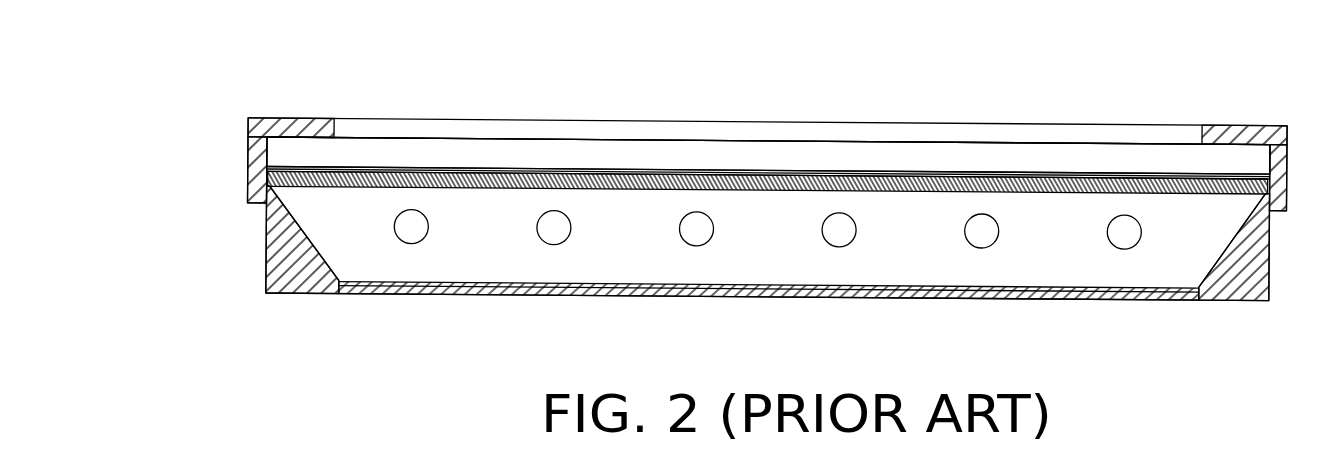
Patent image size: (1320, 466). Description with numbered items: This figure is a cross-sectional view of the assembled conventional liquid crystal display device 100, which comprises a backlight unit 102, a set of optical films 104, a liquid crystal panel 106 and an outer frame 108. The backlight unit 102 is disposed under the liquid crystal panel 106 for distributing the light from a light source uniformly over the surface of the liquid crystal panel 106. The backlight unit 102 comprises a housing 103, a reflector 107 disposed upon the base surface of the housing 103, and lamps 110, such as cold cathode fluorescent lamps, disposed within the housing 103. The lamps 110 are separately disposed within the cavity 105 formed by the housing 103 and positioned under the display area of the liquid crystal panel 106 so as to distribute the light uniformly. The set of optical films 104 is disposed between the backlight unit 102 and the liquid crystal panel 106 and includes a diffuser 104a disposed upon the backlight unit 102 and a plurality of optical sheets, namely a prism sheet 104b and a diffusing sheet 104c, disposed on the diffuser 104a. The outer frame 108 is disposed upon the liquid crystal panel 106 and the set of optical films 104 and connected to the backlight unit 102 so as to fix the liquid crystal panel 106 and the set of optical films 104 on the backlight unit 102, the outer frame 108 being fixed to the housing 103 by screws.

The liquid crystal display device 100 is at (1303, 49).
The backlight unit 102 is at (260, 236).
The housing 103 is at (281, 261).
The set of optical films 104 is at (660, 154).
The diffuser 104a is at (271, 179).
The prism sheet 104b is at (262, 168).
The diffusing sheet 104c is at (282, 153).
The cavity 105 is at (377, 258).
The liquid crystal panel 106 is at (252, 135).
The reflector 107 is at (907, 291).
The outer frame 108 is at (253, 128).
The lamps 110 is at (555, 226).